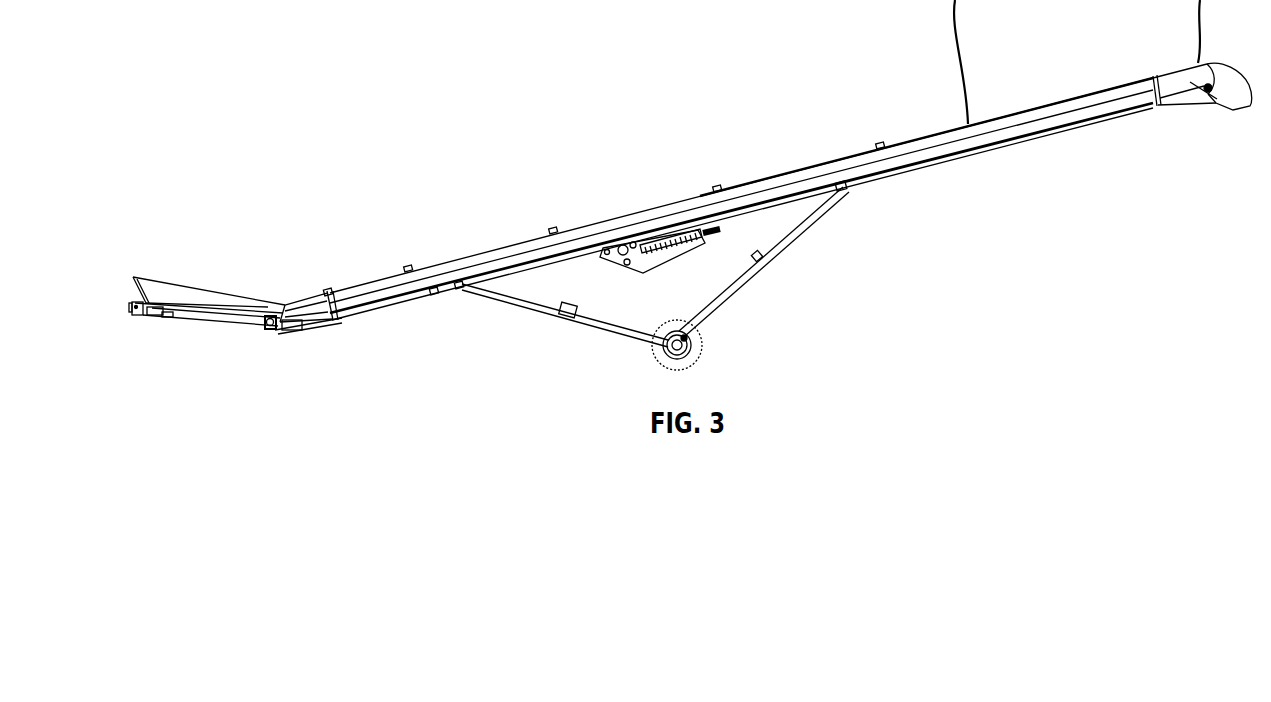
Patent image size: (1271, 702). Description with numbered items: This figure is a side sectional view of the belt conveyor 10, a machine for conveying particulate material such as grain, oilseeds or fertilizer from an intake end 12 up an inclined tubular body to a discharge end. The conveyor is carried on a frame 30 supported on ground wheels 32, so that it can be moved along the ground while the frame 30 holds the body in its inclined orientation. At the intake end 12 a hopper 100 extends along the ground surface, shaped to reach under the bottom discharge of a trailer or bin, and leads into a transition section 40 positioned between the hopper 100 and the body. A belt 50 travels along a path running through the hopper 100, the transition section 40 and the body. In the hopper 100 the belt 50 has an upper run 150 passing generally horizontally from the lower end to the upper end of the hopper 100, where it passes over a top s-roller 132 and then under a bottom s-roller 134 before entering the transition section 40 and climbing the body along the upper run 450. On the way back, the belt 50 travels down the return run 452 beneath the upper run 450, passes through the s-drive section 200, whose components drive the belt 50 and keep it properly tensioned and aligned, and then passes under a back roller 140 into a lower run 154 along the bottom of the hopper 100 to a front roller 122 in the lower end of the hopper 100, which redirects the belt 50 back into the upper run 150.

The belt conveyor 10 is at (461, 126).
The intake end 12 is at (200, 302).
The frame 30 is at (760, 266).
The ground wheels 32 is at (648, 368).
The transition section 40 is at (317, 291).
The belt 50 is at (942, 162).
The hopper 100 is at (227, 302).
The front roller 122 is at (142, 318).
The top s-roller 132 is at (273, 333).
The bottom s-roller 134 is at (268, 333).
The back roller 140 is at (292, 335).
The upper run 150 is at (216, 302).
The lower run 154 is at (230, 327).
The s-drive section 200 is at (683, 233).
The upper run 450 is at (525, 262).
The return run 452 is at (402, 300).